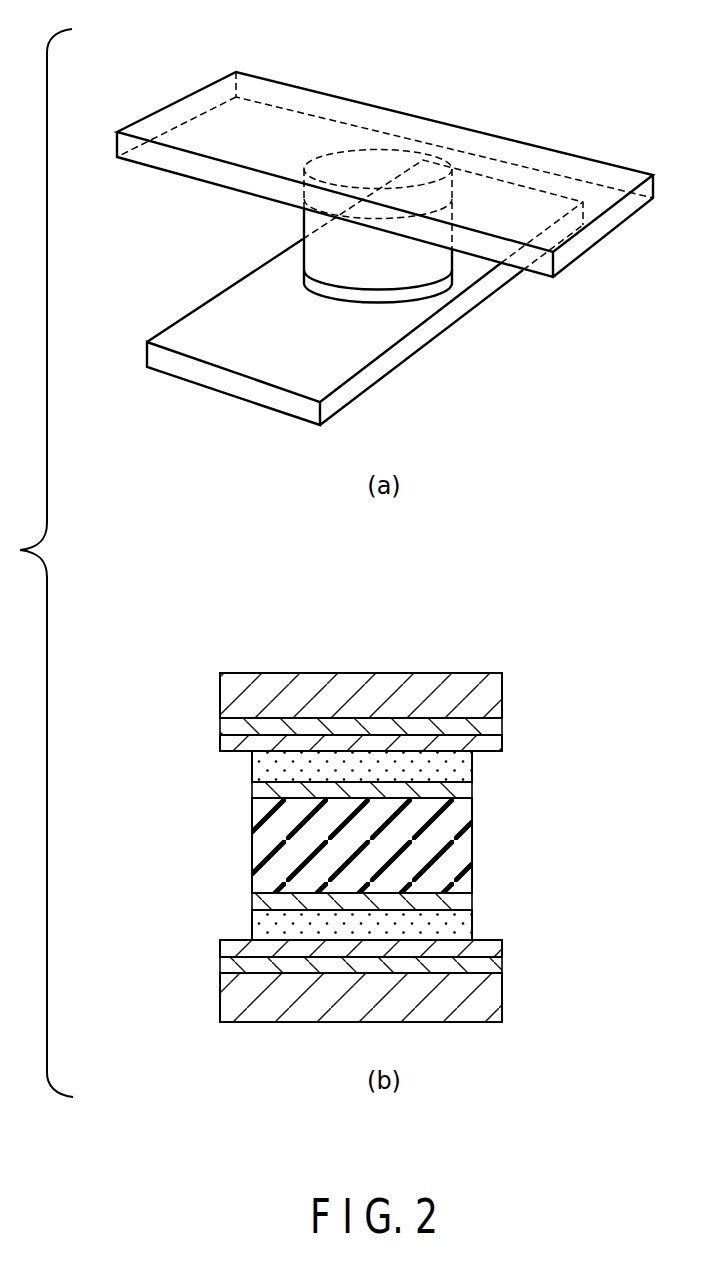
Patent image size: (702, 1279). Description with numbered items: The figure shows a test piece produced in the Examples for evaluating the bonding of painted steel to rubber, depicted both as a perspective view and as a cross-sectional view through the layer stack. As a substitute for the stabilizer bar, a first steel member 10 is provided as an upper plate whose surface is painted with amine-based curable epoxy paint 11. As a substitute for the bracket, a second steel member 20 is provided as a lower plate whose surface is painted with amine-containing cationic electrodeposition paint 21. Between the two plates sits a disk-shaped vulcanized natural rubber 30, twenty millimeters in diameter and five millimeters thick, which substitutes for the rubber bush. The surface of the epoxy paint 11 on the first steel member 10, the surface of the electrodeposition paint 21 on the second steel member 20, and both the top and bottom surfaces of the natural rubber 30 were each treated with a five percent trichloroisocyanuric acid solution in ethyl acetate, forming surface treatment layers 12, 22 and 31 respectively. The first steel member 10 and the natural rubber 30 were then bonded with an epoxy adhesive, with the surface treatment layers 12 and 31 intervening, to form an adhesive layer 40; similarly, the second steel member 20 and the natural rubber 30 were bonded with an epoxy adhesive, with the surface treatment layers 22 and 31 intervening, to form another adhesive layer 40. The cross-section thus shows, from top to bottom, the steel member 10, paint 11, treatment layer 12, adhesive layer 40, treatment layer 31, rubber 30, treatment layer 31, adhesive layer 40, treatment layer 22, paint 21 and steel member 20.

The first steel member 10 is at (271, 90).
The amine-based curable epoxy paint 11 is at (497, 725).
The surface treatment layer 12 is at (497, 743).
The second steel member 20 is at (333, 371).
The amine-containing cationic electrodeposition paint 21 is at (497, 962).
The surface treatment layer 22 is at (498, 942).
The natural rubber 30 is at (417, 268).
The surface treatment layer 31 is at (465, 795).
The adhesive layer 40 is at (385, 297).